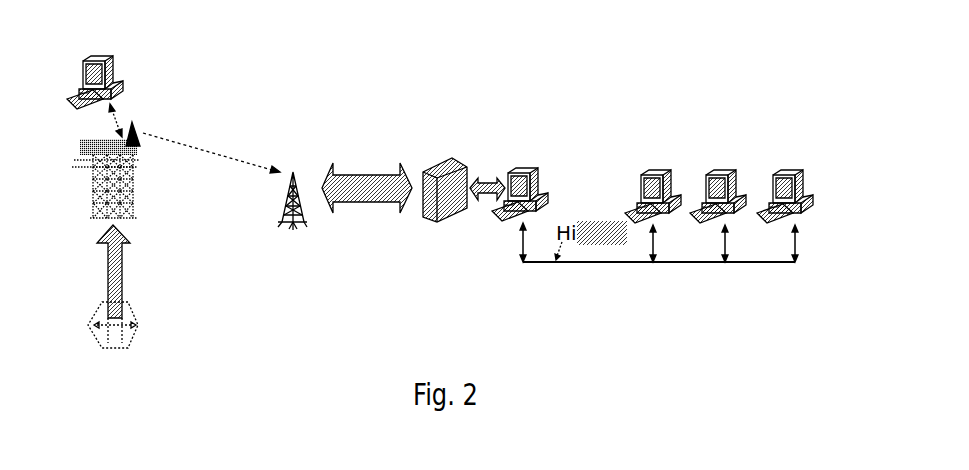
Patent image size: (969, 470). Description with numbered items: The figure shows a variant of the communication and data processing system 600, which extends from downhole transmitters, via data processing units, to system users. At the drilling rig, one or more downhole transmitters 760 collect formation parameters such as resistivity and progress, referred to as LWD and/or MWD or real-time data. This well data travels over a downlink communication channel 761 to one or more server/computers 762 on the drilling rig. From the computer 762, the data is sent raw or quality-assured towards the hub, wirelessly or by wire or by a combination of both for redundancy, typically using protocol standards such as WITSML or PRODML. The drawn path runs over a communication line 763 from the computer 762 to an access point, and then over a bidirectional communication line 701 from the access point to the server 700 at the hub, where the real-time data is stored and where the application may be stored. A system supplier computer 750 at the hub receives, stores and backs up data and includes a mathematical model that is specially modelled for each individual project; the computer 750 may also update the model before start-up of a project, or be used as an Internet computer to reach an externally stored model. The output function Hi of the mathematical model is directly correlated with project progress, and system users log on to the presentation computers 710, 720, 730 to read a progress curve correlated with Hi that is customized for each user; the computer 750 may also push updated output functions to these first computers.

The communication and data processing system 600 is at (483, 46).
The server 700 is at (445, 190).
The bidirectional communication line 701 is at (367, 188).
The presentation computer 710 is at (655, 165).
The presentation computer 720 is at (730, 168).
The presentation computer 730 is at (795, 168).
The system supplier computer 750 is at (537, 168).
The downhole transmitters 760 is at (139, 325).
The communication channel 761 is at (114, 285).
The computer 762 is at (132, 83).
The communication line 763 is at (211, 143).